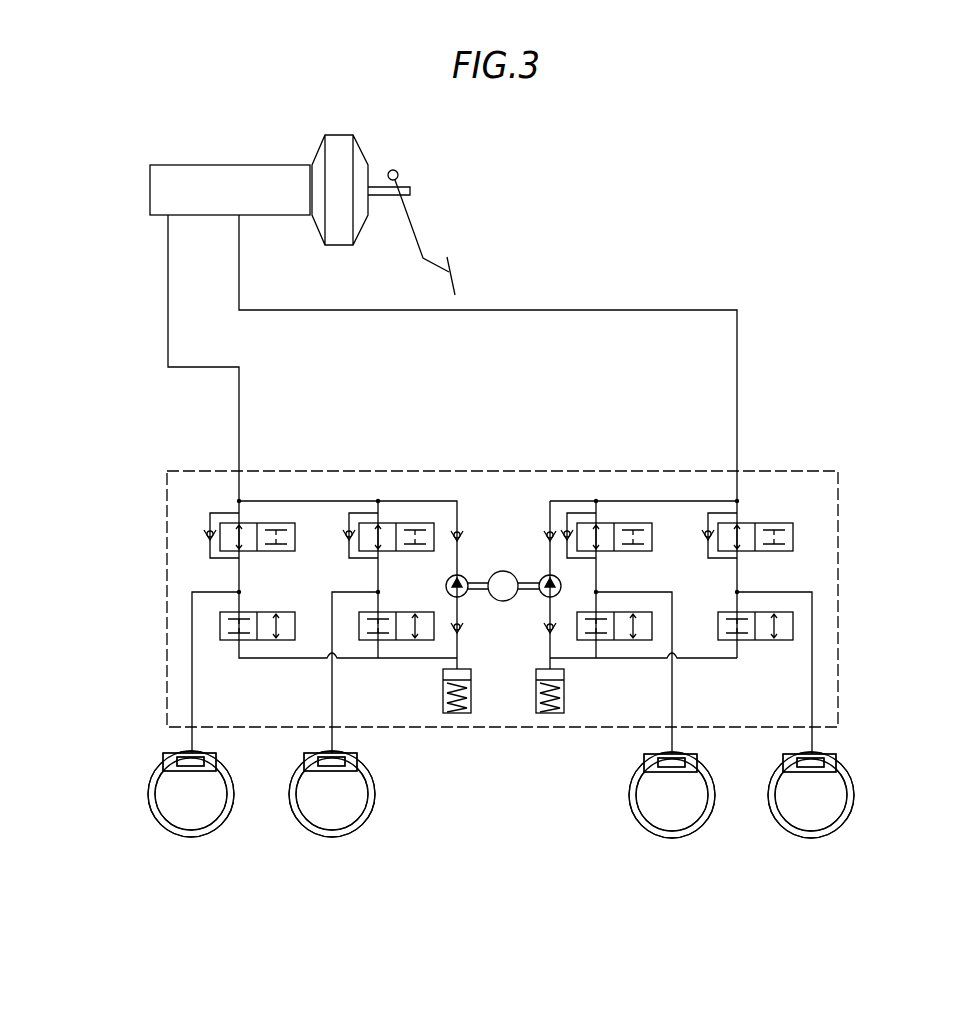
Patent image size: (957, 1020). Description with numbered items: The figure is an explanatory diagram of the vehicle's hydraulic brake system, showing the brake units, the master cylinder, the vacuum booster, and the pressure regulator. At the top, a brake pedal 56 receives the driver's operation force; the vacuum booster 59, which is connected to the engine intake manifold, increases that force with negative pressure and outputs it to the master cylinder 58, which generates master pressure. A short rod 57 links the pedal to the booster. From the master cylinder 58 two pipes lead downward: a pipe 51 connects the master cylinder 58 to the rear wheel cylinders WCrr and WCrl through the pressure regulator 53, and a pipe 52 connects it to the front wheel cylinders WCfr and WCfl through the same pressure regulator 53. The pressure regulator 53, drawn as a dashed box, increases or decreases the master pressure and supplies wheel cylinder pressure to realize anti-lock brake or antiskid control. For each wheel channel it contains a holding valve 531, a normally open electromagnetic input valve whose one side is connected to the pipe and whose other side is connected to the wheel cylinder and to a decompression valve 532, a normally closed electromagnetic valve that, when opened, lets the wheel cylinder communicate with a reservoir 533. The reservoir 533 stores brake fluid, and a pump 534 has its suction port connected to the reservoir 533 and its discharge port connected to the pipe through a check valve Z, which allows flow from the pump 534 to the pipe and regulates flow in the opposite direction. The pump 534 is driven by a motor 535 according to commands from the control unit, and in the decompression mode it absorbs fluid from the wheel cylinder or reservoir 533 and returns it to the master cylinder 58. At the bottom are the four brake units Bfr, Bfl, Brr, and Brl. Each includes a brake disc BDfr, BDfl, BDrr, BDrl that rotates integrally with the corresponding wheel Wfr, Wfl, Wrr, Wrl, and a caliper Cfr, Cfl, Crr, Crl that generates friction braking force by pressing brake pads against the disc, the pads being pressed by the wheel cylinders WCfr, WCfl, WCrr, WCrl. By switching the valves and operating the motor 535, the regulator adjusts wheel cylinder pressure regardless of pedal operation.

The pipe 51 is at (576, 311).
The pipe 52 is at (242, 393).
The pressure regulator 53 is at (628, 471).
The holding valve 531 is at (262, 523).
The decompression valve 532 is at (266, 612).
The reservoir 533 is at (468, 692).
The pump 534 is at (462, 577).
The motor 535 is at (513, 572).
The brake pedal 56 is at (417, 252).
The push rod 57 is at (410, 191).
The master cylinder 58 is at (217, 165).
The vacuum booster 59 is at (343, 135).
The check valve Z is at (205, 539).
The brake unit Bfr is at (135, 790).
The caliper Cfr is at (164, 756).
The wheel cylinder WCfr is at (198, 762).
The brake disc BDfr is at (160, 815).
The wheel Wfr is at (200, 832).
The brake unit Bfl is at (390, 823).
The caliper Cfl is at (342, 752).
The wheel cylinder WCfl is at (357, 766).
The brake disc BDfl is at (312, 826).
The wheel Wfl is at (335, 832).
The brake unit Brr is at (612, 815).
The caliper Crr is at (645, 760).
The wheel cylinder WCrr is at (675, 762).
The brake disc BDrr is at (648, 826).
The wheel Wrr is at (678, 838).
The brake unit Brl is at (868, 797).
The caliper Crl is at (818, 755).
The wheel cylinder WCrl is at (820, 760).
The brake disc BDrl is at (792, 828).
The wheel Wrl is at (820, 838).